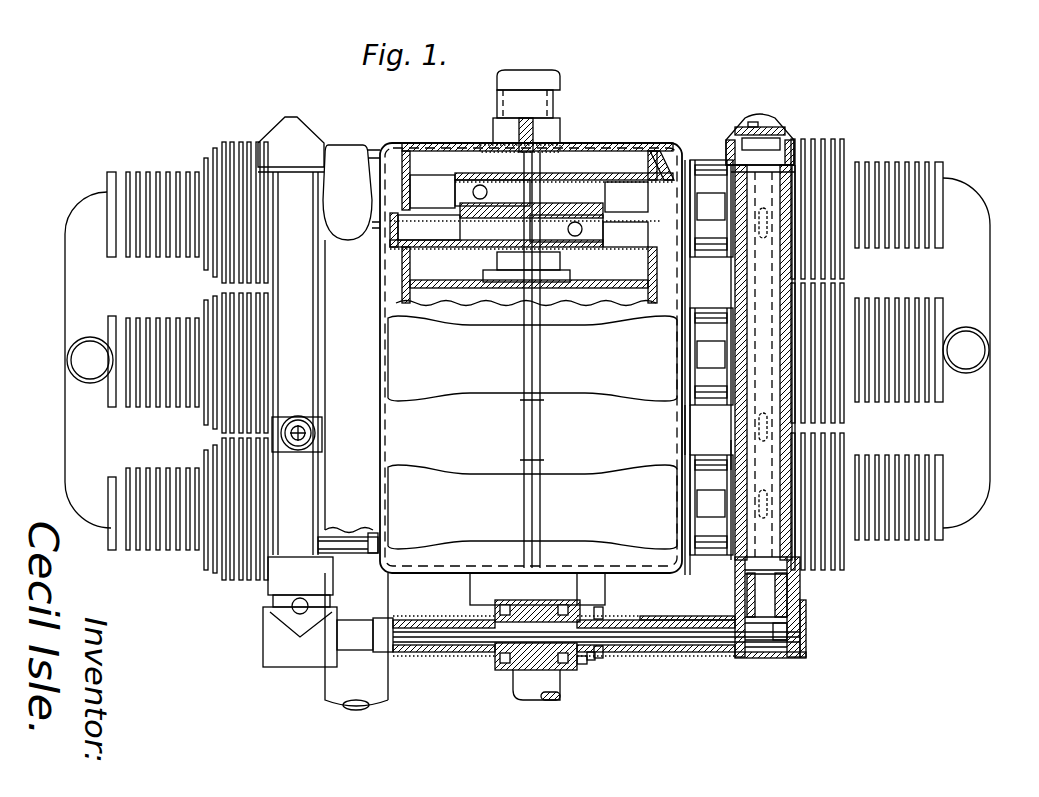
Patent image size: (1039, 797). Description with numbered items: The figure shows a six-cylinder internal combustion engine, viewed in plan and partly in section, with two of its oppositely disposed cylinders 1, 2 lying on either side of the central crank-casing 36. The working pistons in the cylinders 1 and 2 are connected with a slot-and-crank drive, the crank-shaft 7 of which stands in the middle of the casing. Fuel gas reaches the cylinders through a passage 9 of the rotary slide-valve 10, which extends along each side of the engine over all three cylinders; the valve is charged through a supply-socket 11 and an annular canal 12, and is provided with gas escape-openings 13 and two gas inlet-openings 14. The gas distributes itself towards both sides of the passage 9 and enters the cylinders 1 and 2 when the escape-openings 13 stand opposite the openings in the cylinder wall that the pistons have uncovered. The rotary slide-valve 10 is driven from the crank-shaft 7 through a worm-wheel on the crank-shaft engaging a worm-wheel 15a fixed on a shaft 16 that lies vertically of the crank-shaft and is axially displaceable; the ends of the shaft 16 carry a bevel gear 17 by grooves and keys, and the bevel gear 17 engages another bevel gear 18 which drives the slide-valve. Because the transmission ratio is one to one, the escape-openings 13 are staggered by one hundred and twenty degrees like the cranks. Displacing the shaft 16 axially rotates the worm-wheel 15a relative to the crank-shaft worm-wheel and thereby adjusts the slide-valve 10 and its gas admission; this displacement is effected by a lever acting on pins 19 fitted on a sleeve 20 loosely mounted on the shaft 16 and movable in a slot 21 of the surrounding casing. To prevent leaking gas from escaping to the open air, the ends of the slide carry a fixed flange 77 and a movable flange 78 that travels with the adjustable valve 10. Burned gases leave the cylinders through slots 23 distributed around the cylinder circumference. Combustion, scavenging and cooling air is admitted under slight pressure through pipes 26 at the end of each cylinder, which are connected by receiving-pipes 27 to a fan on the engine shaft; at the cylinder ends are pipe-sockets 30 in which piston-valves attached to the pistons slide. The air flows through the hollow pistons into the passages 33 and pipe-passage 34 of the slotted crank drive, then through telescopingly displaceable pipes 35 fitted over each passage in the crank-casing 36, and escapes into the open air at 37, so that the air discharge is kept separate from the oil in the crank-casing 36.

The cylinder 1 is at (226, 162).
The cylinder 2 is at (832, 175).
The crank-shaft 7 is at (542, 80).
The passage 9 is at (733, 452).
The rotary slide-valve 10 is at (318, 440).
The supply-socket 11 is at (288, 416).
The annular canal 12 is at (747, 430).
The gas escape-openings 13 is at (760, 195).
The gas inlet-openings 14 is at (312, 433).
The worm-wheel 15a is at (526, 665).
The shaft 16 is at (485, 638).
The bevel gear 17 is at (760, 655).
The bevel-gear 18 is at (806, 621).
The pins 19 is at (603, 611).
The sleeve 20 is at (581, 667).
The slot 21 is at (591, 660).
The slots 23 is at (715, 213).
The pipes 26 is at (66, 236).
The receiving-pipes 27 is at (80, 370).
The pipe-sockets 30 is at (172, 258).
The passages 33 is at (482, 180).
The pipe-passage 34 is at (456, 193).
The telescopingly displaceable pipes 35 is at (622, 172).
The crank-casing 36 is at (592, 143).
The air escape 37 is at (376, 236).
The fixed flange 77 is at (738, 582).
The movable flange 78 is at (740, 124).